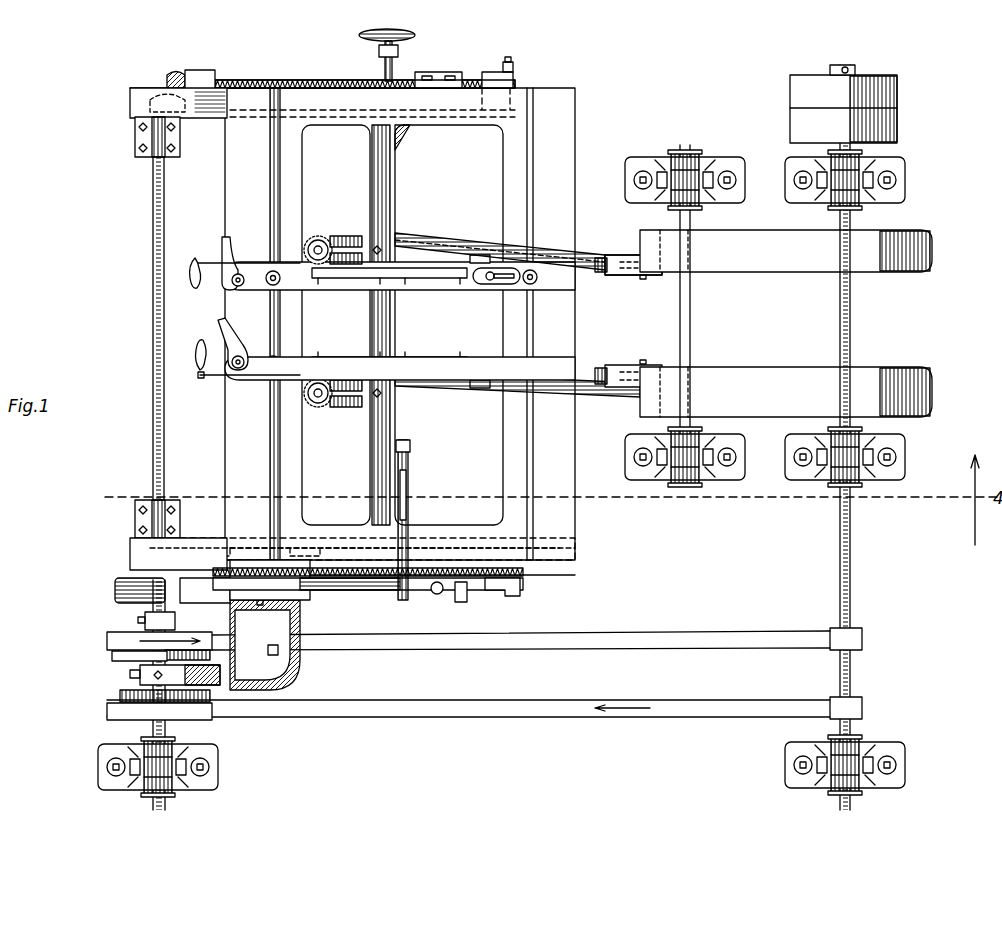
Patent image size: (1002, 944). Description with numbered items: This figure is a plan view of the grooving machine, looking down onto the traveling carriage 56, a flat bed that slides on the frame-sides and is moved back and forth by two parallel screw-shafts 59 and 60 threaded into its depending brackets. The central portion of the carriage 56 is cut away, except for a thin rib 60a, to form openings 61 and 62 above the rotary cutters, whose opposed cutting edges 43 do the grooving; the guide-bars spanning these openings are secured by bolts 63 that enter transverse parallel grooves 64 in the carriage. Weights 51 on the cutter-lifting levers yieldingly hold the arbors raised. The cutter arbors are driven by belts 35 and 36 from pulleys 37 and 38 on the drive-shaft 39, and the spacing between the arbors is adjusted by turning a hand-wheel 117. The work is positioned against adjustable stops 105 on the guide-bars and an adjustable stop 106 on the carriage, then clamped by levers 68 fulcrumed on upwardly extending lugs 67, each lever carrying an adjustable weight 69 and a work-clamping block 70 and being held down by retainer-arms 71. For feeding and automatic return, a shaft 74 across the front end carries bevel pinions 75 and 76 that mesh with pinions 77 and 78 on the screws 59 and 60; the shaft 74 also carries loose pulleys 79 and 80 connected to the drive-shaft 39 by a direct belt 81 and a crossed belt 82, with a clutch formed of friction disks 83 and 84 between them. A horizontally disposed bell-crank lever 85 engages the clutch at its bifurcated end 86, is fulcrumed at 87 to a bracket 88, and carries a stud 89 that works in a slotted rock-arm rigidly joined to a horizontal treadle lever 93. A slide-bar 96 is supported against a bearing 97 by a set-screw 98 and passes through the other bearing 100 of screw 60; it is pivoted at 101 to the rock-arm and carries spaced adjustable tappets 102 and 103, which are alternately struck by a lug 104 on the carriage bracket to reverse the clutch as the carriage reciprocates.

The belt 35 is at (592, 228).
The belt 36 is at (612, 398).
The pulley 37 is at (788, 275).
The pulley 38 is at (782, 368).
The drive-shaft 39 is at (852, 552).
The cutting edges 43 is at (328, 240).
The weight 51 is at (600, 278).
The traveling carriage 56 is at (240, 160).
The screw-shaft 59 is at (298, 82).
The screw-shaft 60 is at (358, 582).
The thin rib 60a is at (400, 348).
The opening 61 is at (449, 193).
The opening 62 is at (449, 452).
The bolts 63 is at (278, 272).
The transverse parallel grooves 64 is at (300, 450).
The lugs 67 is at (535, 258).
The levers 68 is at (210, 262).
The weight 69 is at (650, 283).
The work-clamping block 70 is at (412, 272).
The retainer-arms 71 is at (224, 240).
The shaft 74 is at (155, 357).
The bevel pinion 75 is at (150, 100).
The bevel pinion 76 is at (115, 588).
The pinion 77 is at (168, 75).
The pinion 78 is at (145, 575).
The loose pulley 79 is at (110, 722).
The loose pulley 80 is at (107, 650).
The direct belt 81 is at (370, 718).
The crossed belt 82 is at (420, 640).
The friction disk 83 is at (125, 660).
The friction disk 84 is at (120, 693).
The bell-crank lever 85 is at (245, 690).
The bifurcated end 86 is at (160, 675).
The fulcrum 87 is at (280, 678).
The bracket 88 is at (272, 690).
The stud 89 is at (250, 603).
The horizontal lever 93 is at (325, 562).
The slide-bar 96 is at (388, 592).
The bearing 97 is at (197, 572).
The set-screw 98 is at (167, 615).
The bearing 100 is at (520, 592).
The pivotal connection 101 is at (362, 550).
The tappet 102 is at (300, 625).
The tappet 103 is at (464, 602).
The lug 104 is at (436, 596).
The adjustable stops 105 is at (495, 286).
The adjustable stop 106 is at (410, 455).
The hand-wheel 117 is at (415, 34).